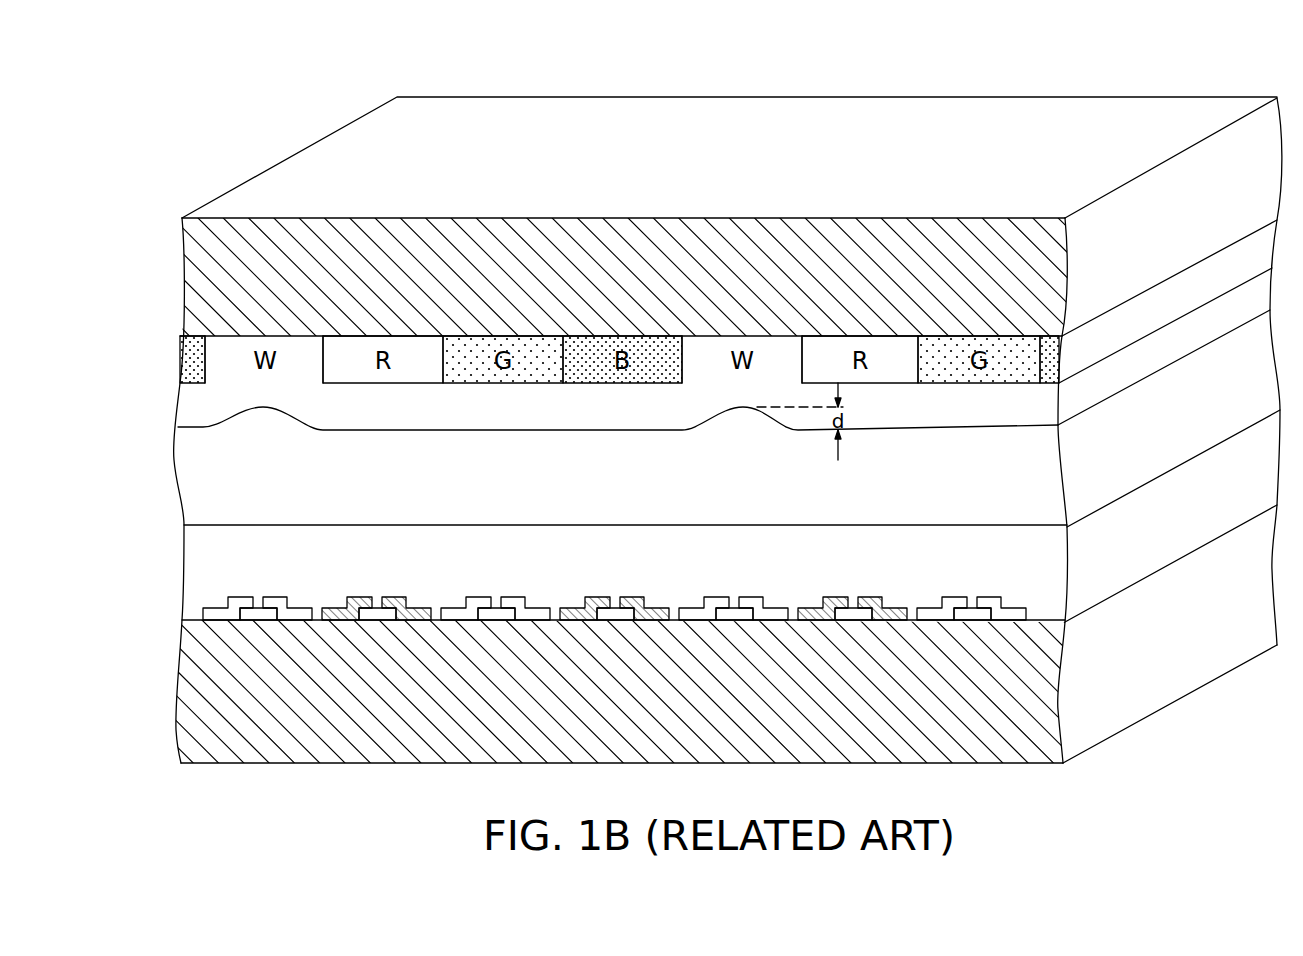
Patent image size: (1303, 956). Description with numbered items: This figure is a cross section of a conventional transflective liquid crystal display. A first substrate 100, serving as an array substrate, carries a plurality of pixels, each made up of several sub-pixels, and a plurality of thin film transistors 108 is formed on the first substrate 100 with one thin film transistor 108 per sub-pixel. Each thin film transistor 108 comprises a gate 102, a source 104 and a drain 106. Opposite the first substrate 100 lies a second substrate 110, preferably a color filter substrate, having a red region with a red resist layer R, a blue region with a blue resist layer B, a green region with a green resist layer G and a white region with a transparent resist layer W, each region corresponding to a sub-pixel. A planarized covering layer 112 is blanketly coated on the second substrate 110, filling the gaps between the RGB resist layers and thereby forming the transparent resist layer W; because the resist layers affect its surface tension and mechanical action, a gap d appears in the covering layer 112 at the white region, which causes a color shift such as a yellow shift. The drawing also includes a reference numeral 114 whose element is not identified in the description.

The first substrate 100 is at (912, 718).
The gate 102 is at (258, 613).
The source 104 is at (217, 613).
The drain 106 is at (300, 613).
The thin film transistor 108 is at (607, 725).
The second substrate 110 is at (838, 234).
The planarized covering layer 112 is at (198, 402).
The liquid crystal layer 114 is at (1045, 598).